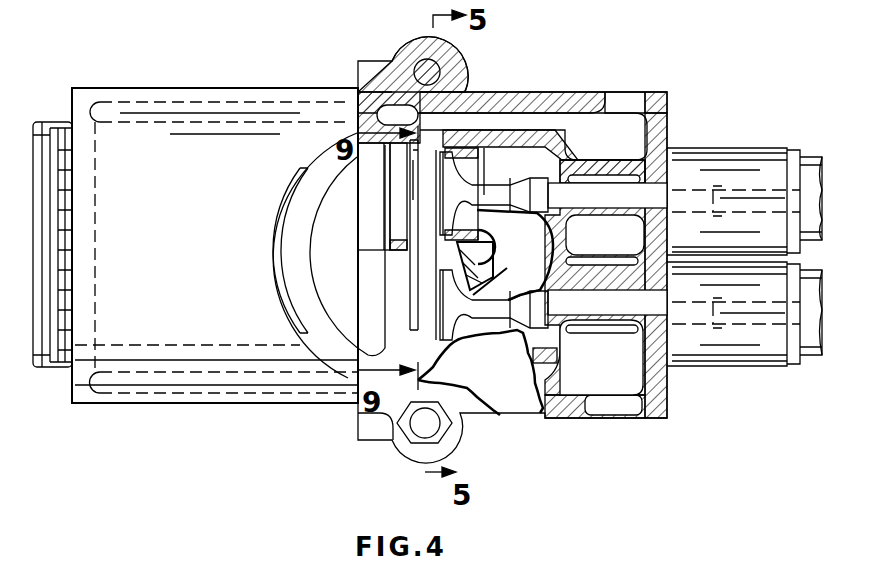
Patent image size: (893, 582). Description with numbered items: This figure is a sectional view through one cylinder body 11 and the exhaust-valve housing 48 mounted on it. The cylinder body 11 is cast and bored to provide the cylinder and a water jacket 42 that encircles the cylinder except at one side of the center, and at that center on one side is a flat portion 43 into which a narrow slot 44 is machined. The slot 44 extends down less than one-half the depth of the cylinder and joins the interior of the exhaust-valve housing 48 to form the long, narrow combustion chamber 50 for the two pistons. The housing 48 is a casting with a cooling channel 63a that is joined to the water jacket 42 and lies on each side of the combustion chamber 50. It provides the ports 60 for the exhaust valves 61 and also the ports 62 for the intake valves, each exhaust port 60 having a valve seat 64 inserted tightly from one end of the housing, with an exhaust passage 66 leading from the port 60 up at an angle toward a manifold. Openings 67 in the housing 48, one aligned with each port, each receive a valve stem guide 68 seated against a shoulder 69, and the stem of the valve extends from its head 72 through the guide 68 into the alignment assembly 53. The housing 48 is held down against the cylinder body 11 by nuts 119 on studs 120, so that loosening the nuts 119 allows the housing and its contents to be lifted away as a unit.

The cylinder body 11 is at (185, 405).
The water jacket 42 is at (329, 255).
The flat portion 43 is at (292, 272).
The slot 44 is at (416, 385).
The exhaust-valve housing 48 is at (547, 250).
The combustion chamber 50 is at (437, 150).
The alignment assembly 53 is at (752, 148).
The exhaust-valve port 60 is at (506, 167).
The exhaust valve 61 is at (478, 232).
The intake-valve port 62 is at (375, 196).
The cooling channel 63a is at (545, 118).
The valve seat 64 is at (470, 140).
The exhaust passage 66 is at (545, 170).
The opening 67 is at (582, 208).
The valve stem guide 68 is at (615, 205).
The shoulder 69 is at (548, 180).
The valve head 72 is at (440, 200).
The nut 119 is at (442, 444).
The stud 120 is at (427, 62).